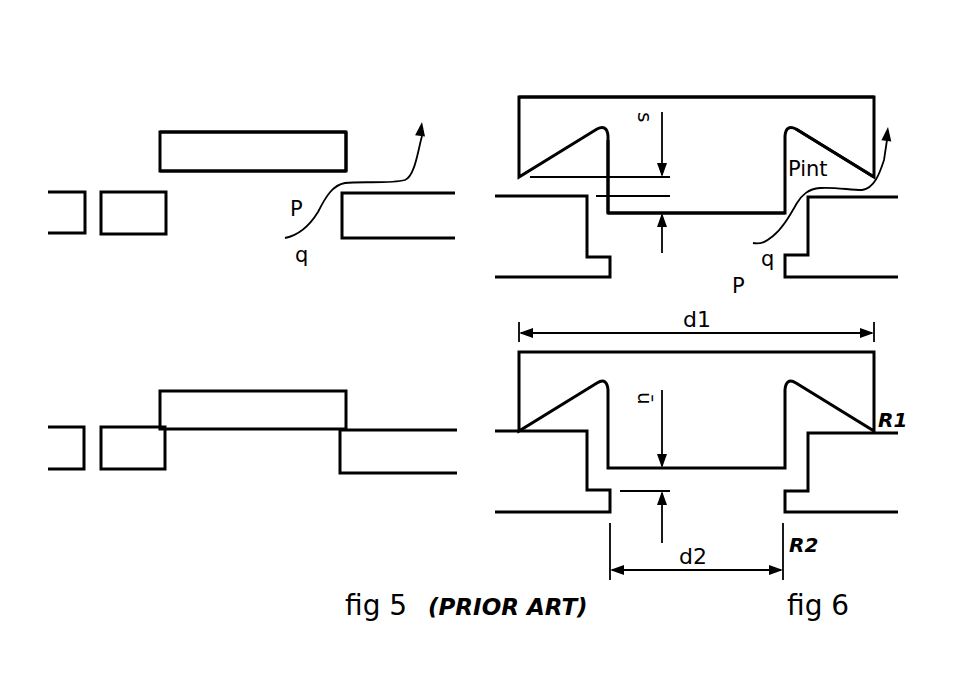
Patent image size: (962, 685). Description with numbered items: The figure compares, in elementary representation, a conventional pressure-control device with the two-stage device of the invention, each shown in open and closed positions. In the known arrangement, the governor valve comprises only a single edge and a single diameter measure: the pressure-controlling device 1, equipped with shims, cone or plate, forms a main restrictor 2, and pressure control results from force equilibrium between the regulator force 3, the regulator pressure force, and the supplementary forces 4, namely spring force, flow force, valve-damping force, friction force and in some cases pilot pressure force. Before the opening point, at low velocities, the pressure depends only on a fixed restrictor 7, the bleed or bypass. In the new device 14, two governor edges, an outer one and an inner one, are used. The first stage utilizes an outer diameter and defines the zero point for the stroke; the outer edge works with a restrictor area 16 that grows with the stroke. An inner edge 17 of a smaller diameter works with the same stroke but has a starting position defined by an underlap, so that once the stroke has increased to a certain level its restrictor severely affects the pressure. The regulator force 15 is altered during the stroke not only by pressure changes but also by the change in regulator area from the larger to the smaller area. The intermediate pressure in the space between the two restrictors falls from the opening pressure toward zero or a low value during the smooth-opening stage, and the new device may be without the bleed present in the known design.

In FIG. 5, the pressure-controlling device 1 is at (160, 128).
In FIG. 5, the main restrictor 2 is at (350, 163).
In FIG. 5, the regulator force 3 is at (253, 174).
In FIG. 5, the supplementary forces 4 is at (253, 130).
In FIG. 6, the supplementary forces 4 is at (698, 95).
In FIG. 5, the fixed restrictor 7 is at (92, 254).
In FIG. 6, the new device 14 is at (521, 93).
In FIG. 6, the regulator force 15 is at (698, 216).
In FIG. 6, the restrictor area 16 is at (869, 193).
In FIG. 6, the inner edge 17 is at (605, 217).